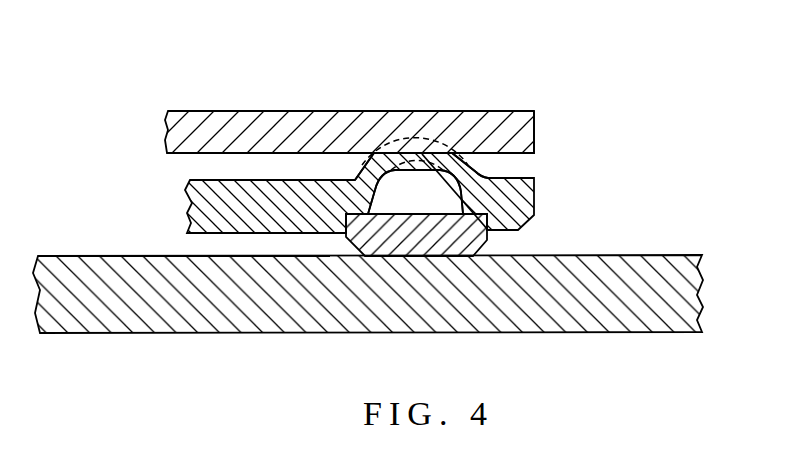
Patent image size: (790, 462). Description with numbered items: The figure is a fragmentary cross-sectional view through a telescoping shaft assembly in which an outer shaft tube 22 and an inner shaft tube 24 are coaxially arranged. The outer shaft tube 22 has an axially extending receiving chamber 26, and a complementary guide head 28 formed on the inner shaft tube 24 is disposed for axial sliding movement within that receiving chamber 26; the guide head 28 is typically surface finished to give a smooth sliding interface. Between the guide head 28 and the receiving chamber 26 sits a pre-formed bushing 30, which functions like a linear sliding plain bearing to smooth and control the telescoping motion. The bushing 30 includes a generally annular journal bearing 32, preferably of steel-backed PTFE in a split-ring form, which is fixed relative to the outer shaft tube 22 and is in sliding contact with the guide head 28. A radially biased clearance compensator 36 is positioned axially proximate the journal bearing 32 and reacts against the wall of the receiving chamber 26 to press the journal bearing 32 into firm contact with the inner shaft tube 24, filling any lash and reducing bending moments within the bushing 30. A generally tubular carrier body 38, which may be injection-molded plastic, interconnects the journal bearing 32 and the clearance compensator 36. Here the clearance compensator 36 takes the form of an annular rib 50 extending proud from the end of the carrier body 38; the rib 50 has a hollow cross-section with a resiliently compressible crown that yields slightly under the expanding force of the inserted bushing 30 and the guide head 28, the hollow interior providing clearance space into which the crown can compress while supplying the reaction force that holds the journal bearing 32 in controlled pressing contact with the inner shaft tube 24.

The outer shaft tube 22 is at (212, 111).
The receiving chamber 26 is at (534, 153).
The carrier body 38 is at (202, 178).
The bushing 30 is at (179, 219).
The clearance compensator 36 is at (368, 173).
The annular rib 50 is at (408, 137).
The journal bearing 32 is at (488, 237).
The guide head 28 is at (66, 256).
The inner shaft tube 24 is at (160, 333).